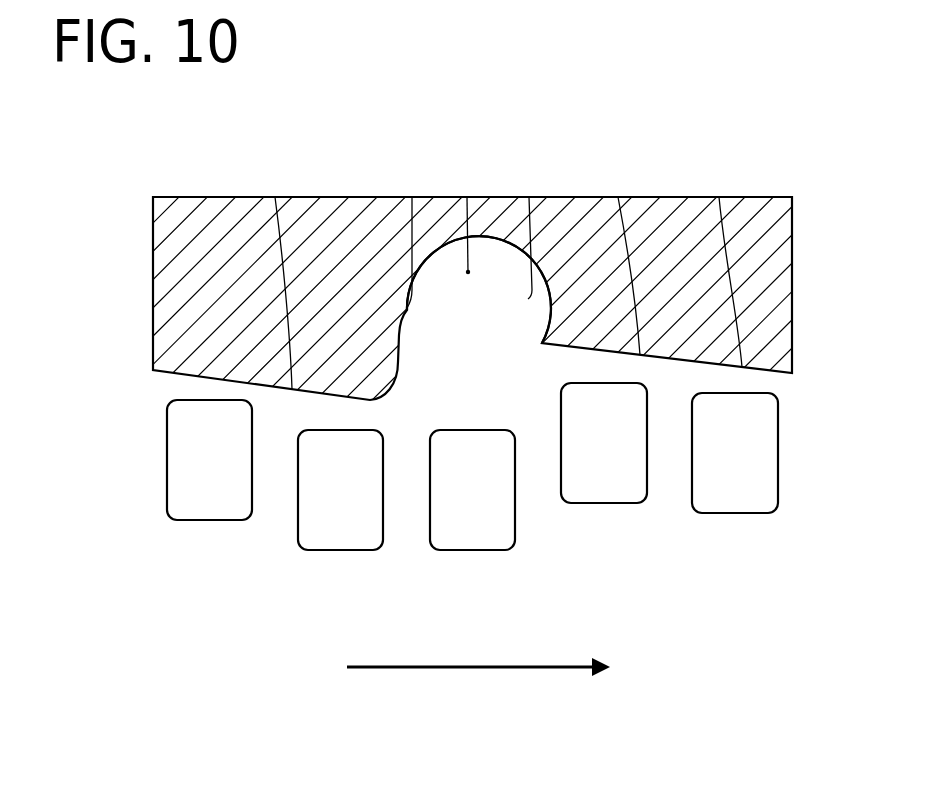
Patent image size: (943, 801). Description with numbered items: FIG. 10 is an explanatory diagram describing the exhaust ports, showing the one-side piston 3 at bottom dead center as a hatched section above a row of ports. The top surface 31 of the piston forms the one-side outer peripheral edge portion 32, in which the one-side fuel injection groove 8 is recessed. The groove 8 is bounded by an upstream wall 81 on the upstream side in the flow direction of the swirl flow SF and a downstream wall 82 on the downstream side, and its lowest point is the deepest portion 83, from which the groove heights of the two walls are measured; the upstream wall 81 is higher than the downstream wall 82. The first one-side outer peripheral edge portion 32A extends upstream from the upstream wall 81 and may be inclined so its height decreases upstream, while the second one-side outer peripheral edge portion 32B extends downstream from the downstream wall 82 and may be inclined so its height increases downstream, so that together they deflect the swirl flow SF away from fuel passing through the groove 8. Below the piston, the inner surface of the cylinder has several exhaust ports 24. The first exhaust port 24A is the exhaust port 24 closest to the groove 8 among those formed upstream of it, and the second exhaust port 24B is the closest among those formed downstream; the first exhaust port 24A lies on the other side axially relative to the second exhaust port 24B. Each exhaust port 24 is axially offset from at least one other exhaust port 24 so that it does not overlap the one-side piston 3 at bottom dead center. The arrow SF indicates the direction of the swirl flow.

The one-side piston 3 is at (218, 197).
The one-side fuel injection groove 8 is at (407, 315).
The upstream wall 81 is at (412, 197).
The downstream wall 82 is at (529, 197).
The deepest portion 83 is at (467, 197).
The exhaust port 24 is at (210, 520).
The first exhaust port 24A is at (340, 550).
The second exhaust port 24B is at (602, 503).
The top surface 31 is at (737, 244).
The one-side outer peripheral edge portion 32 is at (719, 197).
The first one-side outer peripheral edge portion 32A is at (275, 197).
The second one-side outer peripheral edge portion 32B is at (618, 197).
The swirl flow SF is at (470, 670).